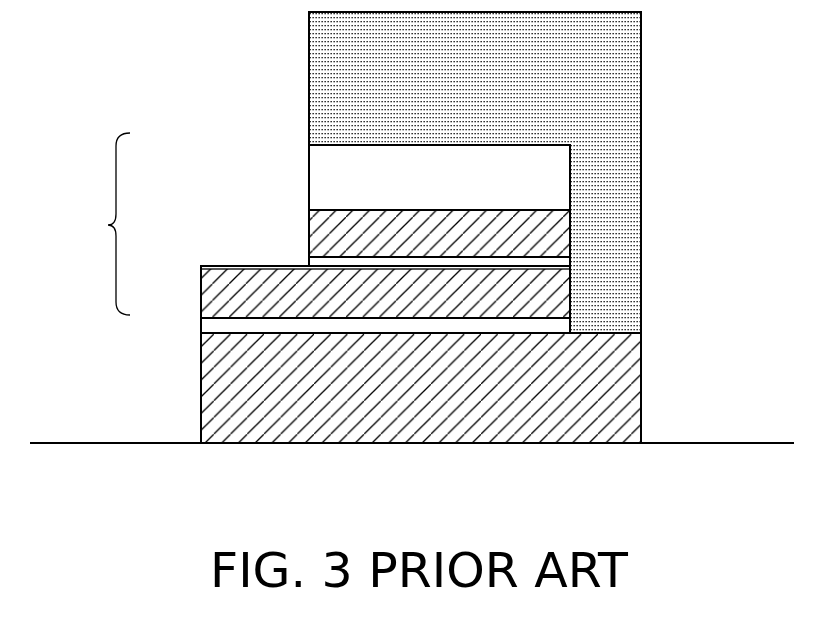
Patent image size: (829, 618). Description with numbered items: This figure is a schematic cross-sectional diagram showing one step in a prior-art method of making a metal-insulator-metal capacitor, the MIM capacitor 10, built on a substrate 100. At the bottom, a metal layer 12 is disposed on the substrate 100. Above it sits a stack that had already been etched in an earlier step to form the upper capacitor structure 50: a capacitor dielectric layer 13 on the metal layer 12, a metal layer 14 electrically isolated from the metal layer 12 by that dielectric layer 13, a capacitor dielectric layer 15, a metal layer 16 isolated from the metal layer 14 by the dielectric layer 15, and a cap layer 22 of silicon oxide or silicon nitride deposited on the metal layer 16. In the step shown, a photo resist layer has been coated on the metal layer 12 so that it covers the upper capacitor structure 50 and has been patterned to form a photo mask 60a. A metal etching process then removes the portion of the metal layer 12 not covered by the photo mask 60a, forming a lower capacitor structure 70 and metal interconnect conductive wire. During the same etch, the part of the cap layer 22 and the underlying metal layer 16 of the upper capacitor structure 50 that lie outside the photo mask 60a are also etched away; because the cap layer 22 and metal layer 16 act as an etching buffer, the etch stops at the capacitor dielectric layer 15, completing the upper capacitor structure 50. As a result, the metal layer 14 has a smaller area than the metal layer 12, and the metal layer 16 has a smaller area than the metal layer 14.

The MIM capacitor 10 is at (108, 225).
The metal layer 12 is at (440, 392).
The capacitor dielectric layer 13 is at (550, 324).
The metal layer 14 is at (440, 310).
The capacitor dielectric layer 15 is at (550, 263).
The metal layer 16 is at (440, 248).
The cap layer 22 is at (440, 190).
The upper capacitor structure 50 is at (288, 233).
The photo mask 60a is at (585, 77).
The lower capacitor structure 70 is at (192, 362).
The substrate 100 is at (447, 482).